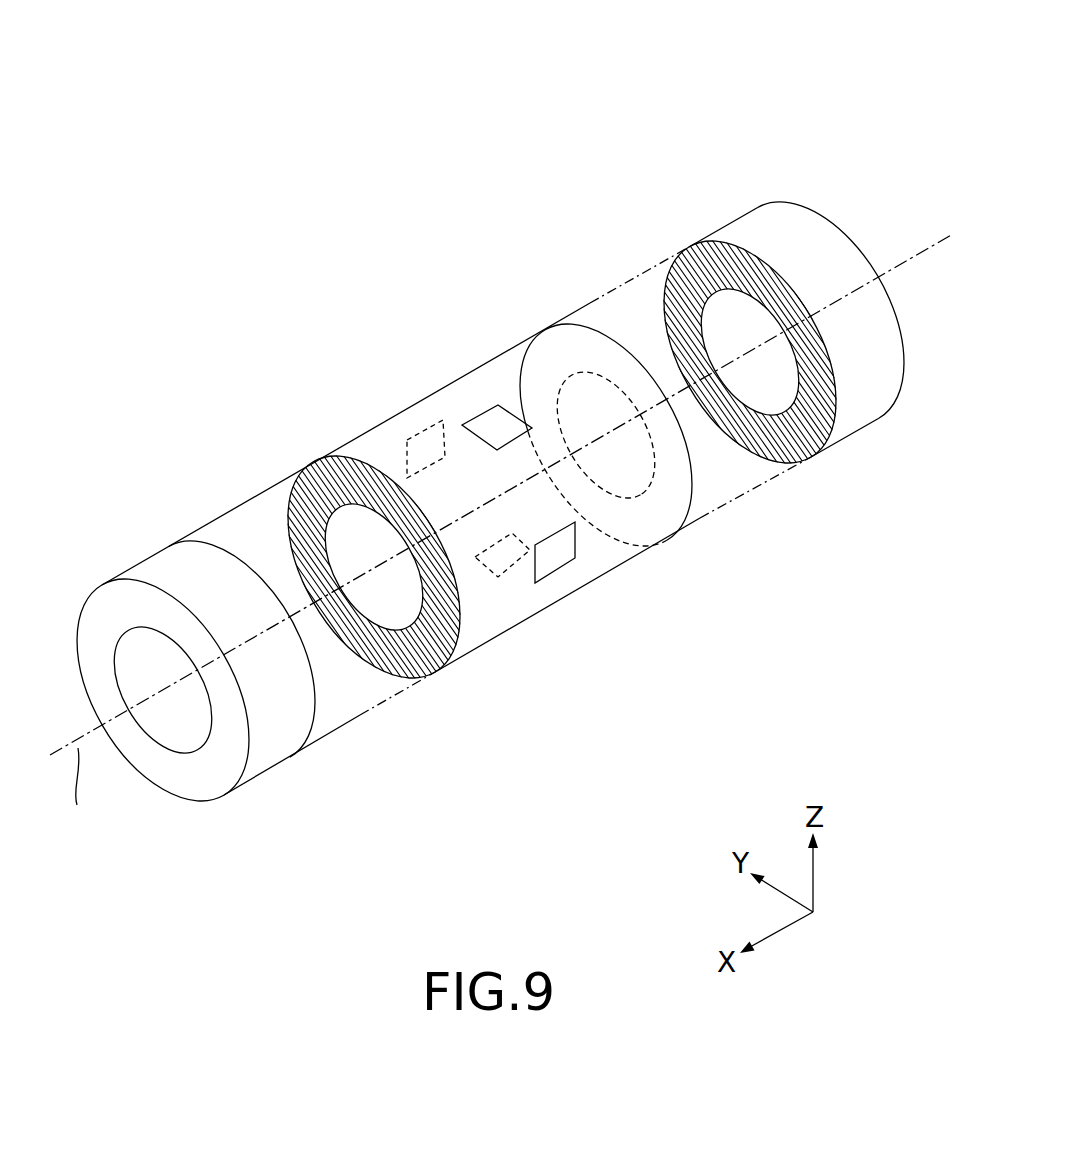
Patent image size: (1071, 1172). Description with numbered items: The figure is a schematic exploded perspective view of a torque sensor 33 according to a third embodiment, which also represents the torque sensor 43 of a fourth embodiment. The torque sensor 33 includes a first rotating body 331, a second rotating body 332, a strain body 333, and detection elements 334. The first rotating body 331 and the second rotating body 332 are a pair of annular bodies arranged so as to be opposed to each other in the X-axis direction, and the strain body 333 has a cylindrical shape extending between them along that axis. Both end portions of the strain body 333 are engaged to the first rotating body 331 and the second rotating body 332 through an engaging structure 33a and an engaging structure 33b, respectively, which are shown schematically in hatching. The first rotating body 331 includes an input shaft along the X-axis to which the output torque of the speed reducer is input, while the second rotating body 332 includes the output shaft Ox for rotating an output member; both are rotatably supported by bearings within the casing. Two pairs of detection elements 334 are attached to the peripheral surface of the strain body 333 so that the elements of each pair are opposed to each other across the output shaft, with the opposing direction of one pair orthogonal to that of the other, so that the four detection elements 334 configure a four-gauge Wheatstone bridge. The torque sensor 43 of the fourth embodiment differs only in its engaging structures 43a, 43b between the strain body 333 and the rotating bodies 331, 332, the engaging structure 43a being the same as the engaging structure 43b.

The torque sensor 33 is at (578, 100).
The torque sensor 43 is at (501, 432).
The first rotating body 331 is at (748, 223).
The second rotating body 332 is at (150, 568).
The strain body 333 is at (672, 538).
The detection elements 334 is at (497, 405).
The engaging structure 33a is at (820, 456).
The engaging structure 43a is at (749, 398).
The engaging structure 33b is at (427, 678).
The engaging structure 43b is at (373, 621).